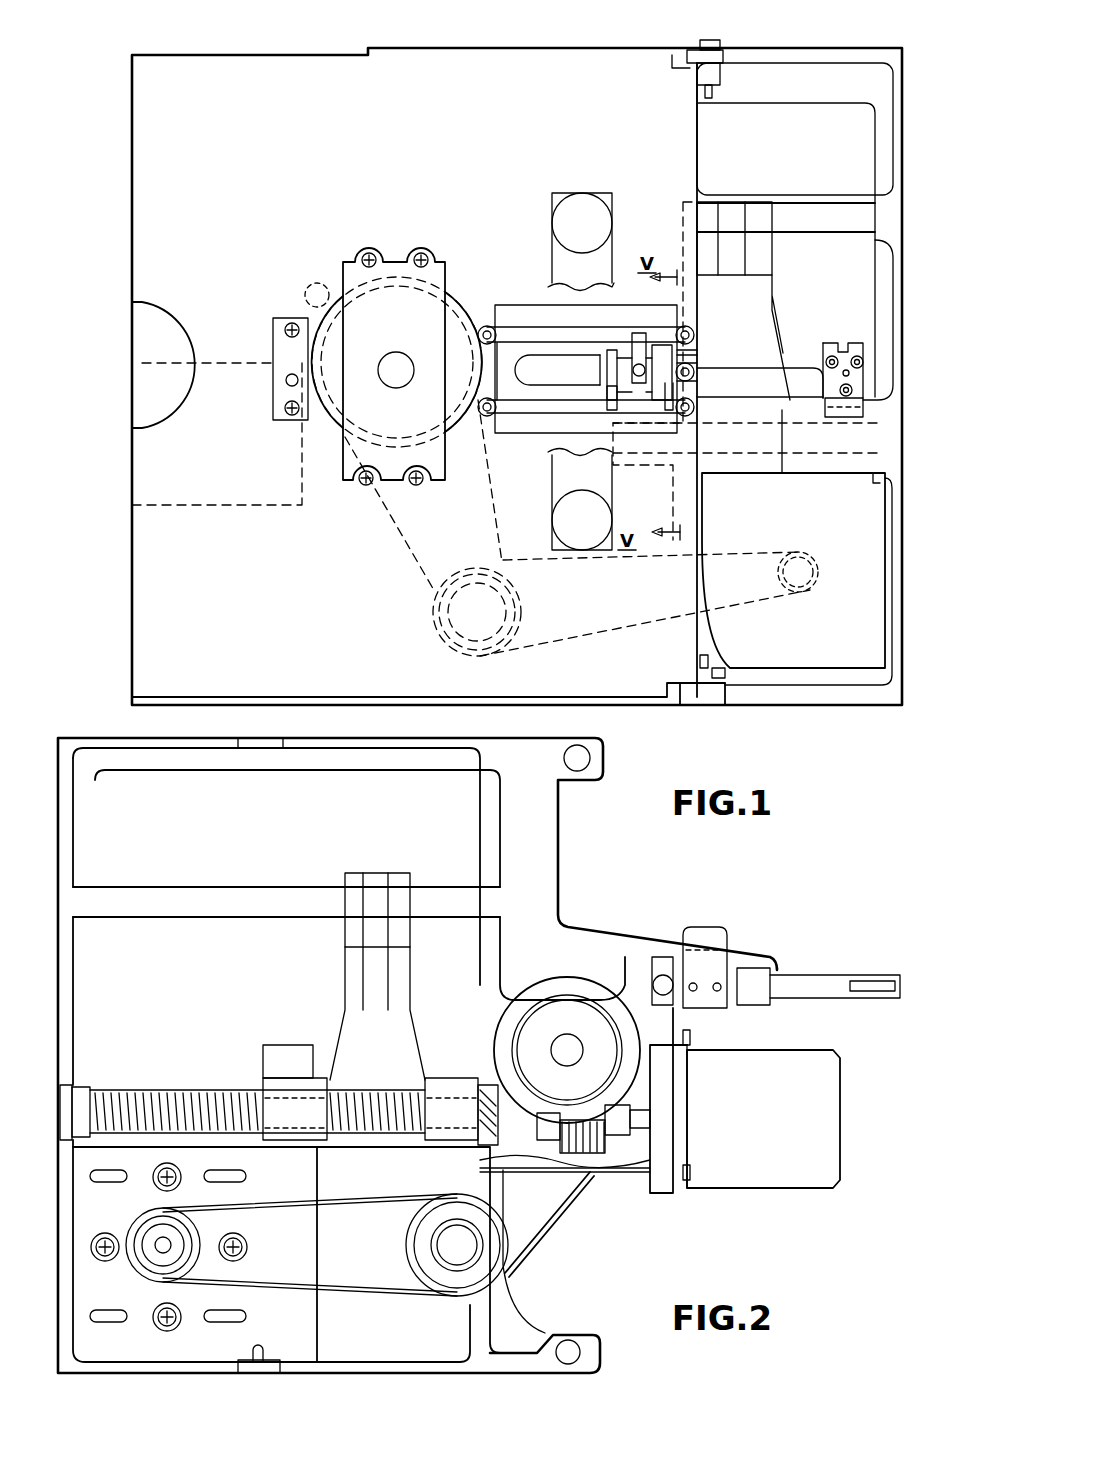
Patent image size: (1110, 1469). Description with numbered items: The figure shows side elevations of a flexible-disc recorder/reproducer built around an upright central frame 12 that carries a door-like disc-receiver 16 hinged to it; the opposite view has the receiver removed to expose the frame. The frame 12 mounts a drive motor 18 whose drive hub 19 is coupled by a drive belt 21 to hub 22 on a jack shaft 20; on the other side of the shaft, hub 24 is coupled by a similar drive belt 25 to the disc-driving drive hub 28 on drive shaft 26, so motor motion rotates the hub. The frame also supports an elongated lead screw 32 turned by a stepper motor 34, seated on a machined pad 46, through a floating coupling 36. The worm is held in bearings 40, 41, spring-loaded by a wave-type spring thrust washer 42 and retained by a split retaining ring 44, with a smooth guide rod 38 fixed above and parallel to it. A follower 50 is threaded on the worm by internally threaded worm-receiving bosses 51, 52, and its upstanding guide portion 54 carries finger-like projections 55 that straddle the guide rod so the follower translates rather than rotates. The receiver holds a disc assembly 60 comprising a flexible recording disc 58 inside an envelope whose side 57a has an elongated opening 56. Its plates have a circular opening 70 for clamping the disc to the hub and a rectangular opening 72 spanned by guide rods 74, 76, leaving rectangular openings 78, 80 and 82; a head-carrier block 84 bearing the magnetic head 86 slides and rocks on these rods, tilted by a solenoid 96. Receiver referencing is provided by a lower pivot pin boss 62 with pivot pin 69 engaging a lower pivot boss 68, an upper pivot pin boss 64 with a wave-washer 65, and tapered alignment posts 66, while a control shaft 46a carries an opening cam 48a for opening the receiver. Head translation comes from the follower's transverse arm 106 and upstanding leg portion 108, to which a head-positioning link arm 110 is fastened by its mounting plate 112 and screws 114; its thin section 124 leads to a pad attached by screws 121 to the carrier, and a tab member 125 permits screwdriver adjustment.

In FIG. 1, the central frame 12 is at (787, 50).
In FIG. 2, the central frame 12 is at (335, 746).
In FIG. 1, the disc-receiver 16 is at (202, 136).
In FIG. 1, the drive motor 18 is at (837, 558).
In FIG. 2, the drive hub 19 is at (140, 1230).
In FIG. 2, the jack shaft 20 is at (447, 1255).
In FIG. 2, the drive belt 21 is at (348, 1208).
In FIG. 1, the hub 22 is at (477, 612).
In FIG. 2, the hub 22 is at (455, 1290).
In FIG. 1, the hub 24 is at (520, 612).
In FIG. 1, the drive belt 25 is at (392, 510).
In FIG. 2, the drive belt 25 is at (525, 1258).
In FIG. 2, the drive shaft 26 is at (558, 1060).
In FIG. 2, the drive hub 28 is at (597, 990).
In FIG. 1, the lead screw 32 is at (815, 455).
In FIG. 2, the lead screw 32 is at (187, 1090).
In FIG. 1, the stepper motor 34 is at (158, 468).
In FIG. 2, the stepper motor 34 is at (749, 1126).
In FIG. 2, the coupling 36 is at (605, 1153).
In FIG. 1, the guide rod 38 is at (816, 218).
In FIG. 2, the guide rod 38 is at (192, 898).
In FIG. 2, the bearing 40 is at (485, 1085).
In FIG. 2, the bearing 41 is at (75, 1095).
In FIG. 2, the spring thrust washer 42 is at (92, 1090).
In FIG. 2, the split retaining ring 44 is at (66, 1112).
In FIG. 2, the machined pad 46 is at (665, 955).
In FIG. 2, the control shaft 46a is at (828, 975).
In FIG. 2, the opening cam 48a is at (718, 935).
In FIG. 1, the follower 50 is at (783, 372).
In FIG. 2, the follower 50 is at (325, 973).
In FIG. 2, the worm-receiving boss 51 is at (295, 1140).
In FIG. 2, the worm-receiving boss 52 is at (445, 1140).
In FIG. 1, the guide portion 54 is at (722, 300).
In FIG. 2, the guide portion 54 is at (367, 991).
In FIG. 1, the finger-like projections 55 is at (770, 215).
In FIG. 2, the finger-like projections 55 is at (350, 875).
In FIG. 1, the elongated opening 56 is at (518, 364).
In FIG. 1, the envelope side 57a is at (394, 366).
In FIG. 1, the flexible recording disc 58 is at (601, 378).
In FIG. 1, the disc assembly 60 is at (150, 338).
In FIG. 1, the lower pivot pin boss 62 is at (712, 705).
In FIG. 2, the lower pivot pin boss 62 is at (248, 1365).
In FIG. 1, the upper pivot pin boss 64 is at (700, 52).
In FIG. 2, the upper pivot pin boss 64 is at (243, 743).
In FIG. 1, the wave-washer 65 is at (698, 78).
In FIG. 1, the alignment post 66 is at (317, 283).
In FIG. 2, the alignment post 66 is at (657, 975).
In FIG. 1, the lower pivot boss 68 is at (726, 673).
In FIG. 1, the pivot pin 69 is at (708, 660).
In FIG. 2, the pivot pin 69 is at (265, 1348).
In FIG. 1, the circular opening 70 is at (450, 300).
In FIG. 1, the rectangular opening 72 is at (505, 305).
In FIG. 1, the guide rod 74 is at (545, 335).
In FIG. 1, the guide rod 76 is at (535, 408).
In FIG. 1, the rectangular opening 78 is at (640, 318).
In FIG. 1, the rectangular opening 80 is at (485, 412).
In FIG. 1, the rectangular opening 82 is at (615, 445).
In FIG. 1, the head-carrier block 84 is at (606, 398).
In FIG. 1, the magnetic head 86 is at (618, 350).
In FIG. 1, the solenoid 96 is at (599, 188).
In FIG. 1, the transverse arm 106 is at (863, 406).
In FIG. 2, the upstanding leg portion 108 is at (296, 1045).
In FIG. 1, the head-positioning link arm 110 is at (812, 362).
In FIG. 1, the mounting plate 112 is at (865, 372).
In FIG. 1, the screws 114 is at (862, 356).
In FIG. 1, the screws 121 is at (695, 355).
In FIG. 1, the thin section 124 is at (757, 368).
In FIG. 1, the tab member 125 is at (840, 340).